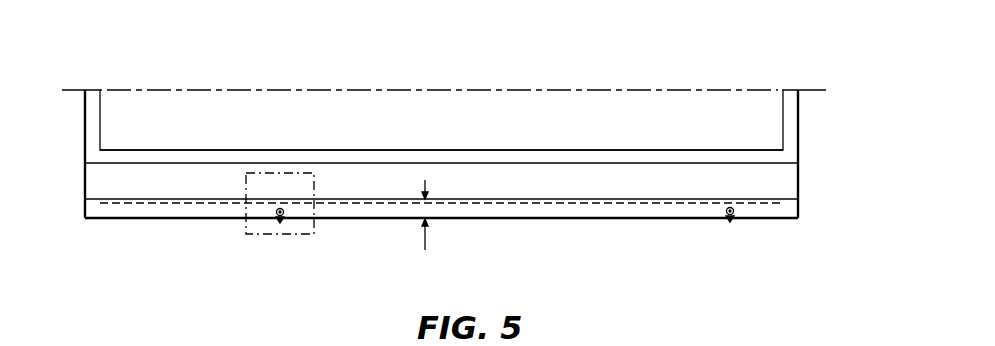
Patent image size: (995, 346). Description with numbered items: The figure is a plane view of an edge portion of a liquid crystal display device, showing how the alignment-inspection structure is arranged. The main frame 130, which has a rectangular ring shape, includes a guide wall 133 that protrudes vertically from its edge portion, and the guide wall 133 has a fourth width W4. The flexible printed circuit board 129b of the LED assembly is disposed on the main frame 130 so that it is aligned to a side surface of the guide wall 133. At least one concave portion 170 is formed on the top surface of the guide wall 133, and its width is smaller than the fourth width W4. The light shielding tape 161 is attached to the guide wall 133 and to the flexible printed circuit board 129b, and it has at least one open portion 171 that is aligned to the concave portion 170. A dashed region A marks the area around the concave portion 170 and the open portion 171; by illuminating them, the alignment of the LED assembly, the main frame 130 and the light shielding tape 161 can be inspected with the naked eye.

The main frame 130 is at (777, 221).
The flexible printed circuit board 129b is at (785, 196).
The light shielding tape 161 is at (652, 196).
The guide wall 133 is at (798, 213).
The concave portion 170 is at (283, 215).
The open portion 171 is at (277, 219).
The enlarged region A is at (245, 220).
The fourth width W4 is at (436, 215).